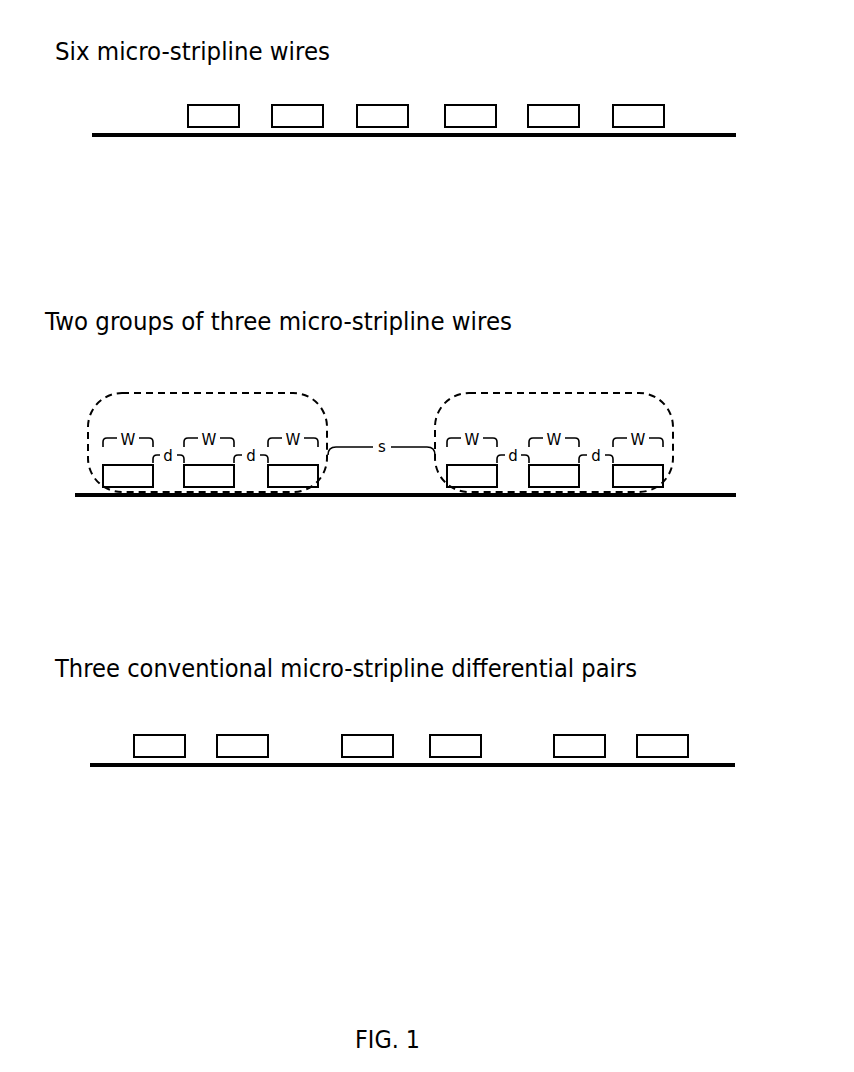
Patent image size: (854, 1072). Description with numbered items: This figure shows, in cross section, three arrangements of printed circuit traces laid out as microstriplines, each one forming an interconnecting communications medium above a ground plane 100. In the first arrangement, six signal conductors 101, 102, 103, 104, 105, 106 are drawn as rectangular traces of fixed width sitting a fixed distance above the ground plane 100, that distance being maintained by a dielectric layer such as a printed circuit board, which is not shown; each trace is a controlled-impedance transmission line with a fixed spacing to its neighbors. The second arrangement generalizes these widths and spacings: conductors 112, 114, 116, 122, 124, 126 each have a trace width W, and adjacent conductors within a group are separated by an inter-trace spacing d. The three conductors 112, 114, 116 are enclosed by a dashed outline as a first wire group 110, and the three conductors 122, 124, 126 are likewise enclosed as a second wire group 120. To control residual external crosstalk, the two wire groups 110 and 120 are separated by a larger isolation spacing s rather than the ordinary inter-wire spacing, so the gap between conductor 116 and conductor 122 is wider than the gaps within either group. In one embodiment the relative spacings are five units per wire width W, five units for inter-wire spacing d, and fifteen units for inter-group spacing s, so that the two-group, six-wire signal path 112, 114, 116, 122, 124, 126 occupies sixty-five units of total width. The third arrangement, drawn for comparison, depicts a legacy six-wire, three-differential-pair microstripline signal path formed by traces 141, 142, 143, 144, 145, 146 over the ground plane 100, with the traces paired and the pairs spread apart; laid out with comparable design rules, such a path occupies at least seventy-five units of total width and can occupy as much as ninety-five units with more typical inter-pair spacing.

The ground plane 100 is at (107, 134).
The signal conductor 101 is at (213, 116).
The signal conductor 102 is at (297, 116).
The signal conductor 103 is at (382, 116).
The signal conductor 104 is at (470, 116).
The signal conductor 105 is at (553, 116).
The signal conductor 106 is at (638, 116).
The wire group 110 is at (221, 392).
The conductor 112 is at (128, 476).
The conductor 114 is at (209, 476).
The conductor 116 is at (293, 476).
The wire group 120 is at (567, 392).
The conductor 122 is at (472, 476).
The conductor 124 is at (554, 476).
The conductor 126 is at (638, 476).
The micro-stripline wire of differential pair 141 is at (159, 746).
The micro-stripline wire of differential pair 142 is at (242, 746).
The micro-stripline wire of differential pair 143 is at (367, 746).
The micro-stripline wire of differential pair 144 is at (455, 746).
The micro-stripline wire of differential pair 145 is at (579, 746).
The micro-stripline wire of differential pair 146 is at (662, 746).